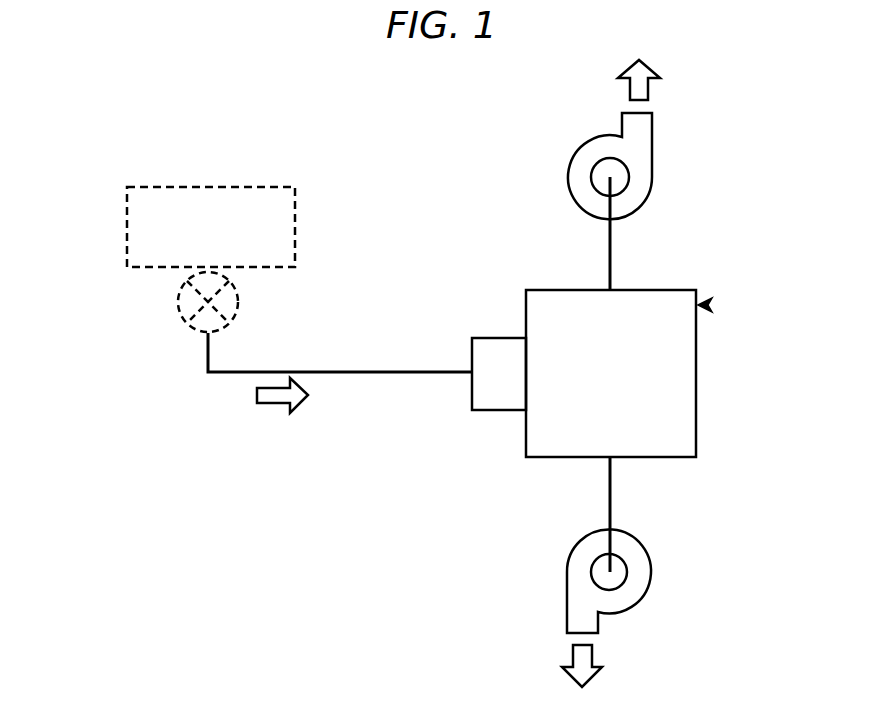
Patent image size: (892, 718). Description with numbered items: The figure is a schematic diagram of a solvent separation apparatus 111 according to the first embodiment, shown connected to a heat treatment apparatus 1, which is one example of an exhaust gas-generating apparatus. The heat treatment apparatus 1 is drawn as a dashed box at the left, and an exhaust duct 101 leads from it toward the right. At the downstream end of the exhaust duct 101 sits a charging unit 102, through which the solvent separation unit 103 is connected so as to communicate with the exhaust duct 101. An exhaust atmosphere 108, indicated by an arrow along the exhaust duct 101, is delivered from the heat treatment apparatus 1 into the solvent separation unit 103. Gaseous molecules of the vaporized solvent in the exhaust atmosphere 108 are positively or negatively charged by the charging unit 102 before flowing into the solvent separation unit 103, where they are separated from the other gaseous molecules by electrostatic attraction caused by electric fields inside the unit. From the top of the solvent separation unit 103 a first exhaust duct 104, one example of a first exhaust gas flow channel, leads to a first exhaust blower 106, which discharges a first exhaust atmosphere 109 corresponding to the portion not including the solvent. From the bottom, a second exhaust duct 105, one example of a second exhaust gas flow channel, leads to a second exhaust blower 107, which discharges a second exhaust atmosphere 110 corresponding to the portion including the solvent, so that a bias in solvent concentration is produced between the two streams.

The heat treatment apparatus 1 is at (127, 228).
The exhaust duct 101 is at (207, 366).
The charging unit 102 is at (500, 410).
The solvent separation unit 103 is at (697, 378).
The first exhaust duct 104 is at (611, 254).
The second exhaust duct 105 is at (611, 493).
The first exhaust blower 106 is at (568, 177).
The second exhaust blower 107 is at (652, 572).
The exhaust atmosphere 108 is at (275, 413).
The first exhaust atmosphere 109 is at (630, 94).
The second exhaust atmosphere 110 is at (594, 655).
The solvent separation apparatus 111 is at (710, 305).